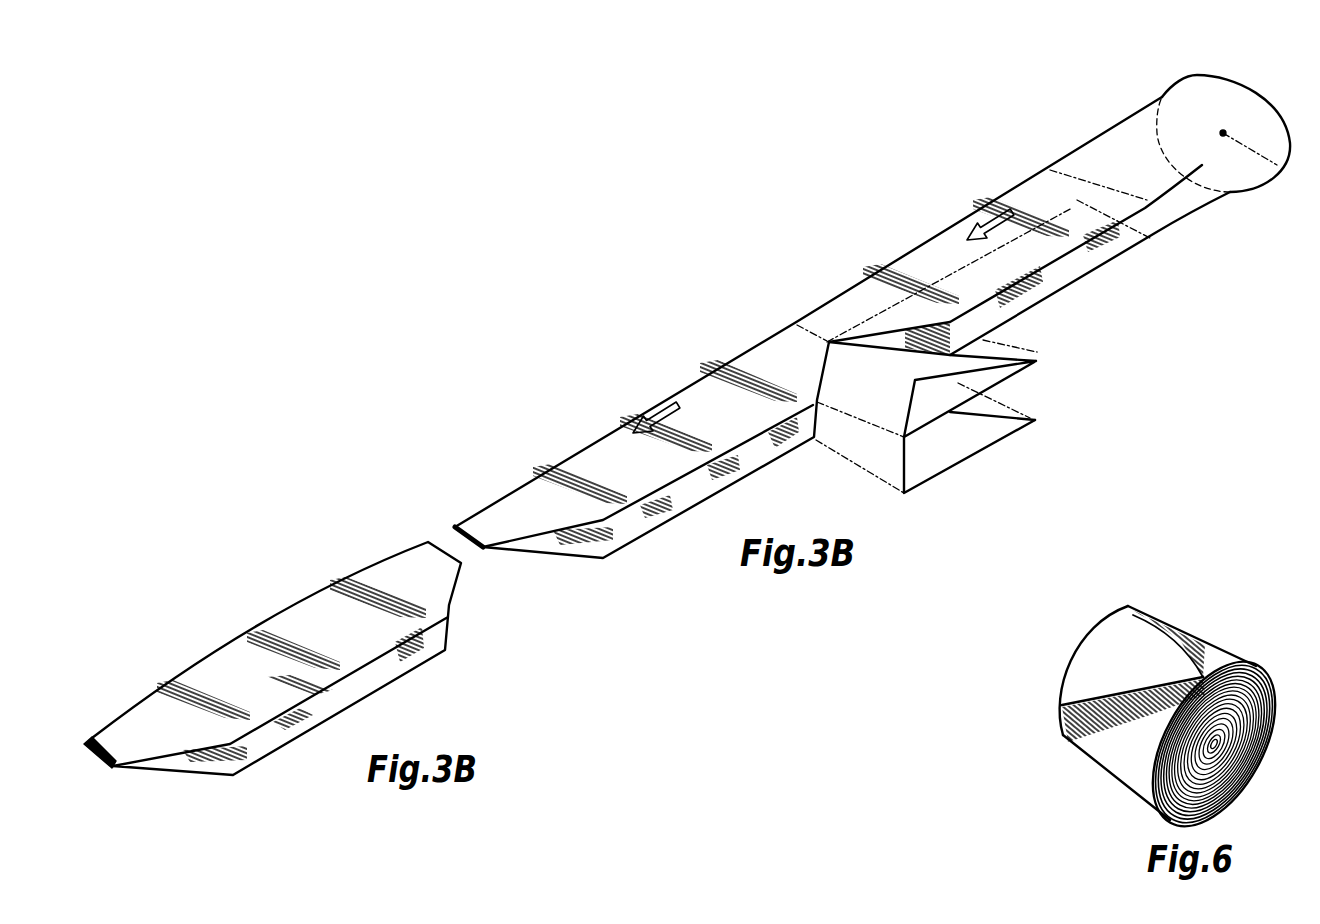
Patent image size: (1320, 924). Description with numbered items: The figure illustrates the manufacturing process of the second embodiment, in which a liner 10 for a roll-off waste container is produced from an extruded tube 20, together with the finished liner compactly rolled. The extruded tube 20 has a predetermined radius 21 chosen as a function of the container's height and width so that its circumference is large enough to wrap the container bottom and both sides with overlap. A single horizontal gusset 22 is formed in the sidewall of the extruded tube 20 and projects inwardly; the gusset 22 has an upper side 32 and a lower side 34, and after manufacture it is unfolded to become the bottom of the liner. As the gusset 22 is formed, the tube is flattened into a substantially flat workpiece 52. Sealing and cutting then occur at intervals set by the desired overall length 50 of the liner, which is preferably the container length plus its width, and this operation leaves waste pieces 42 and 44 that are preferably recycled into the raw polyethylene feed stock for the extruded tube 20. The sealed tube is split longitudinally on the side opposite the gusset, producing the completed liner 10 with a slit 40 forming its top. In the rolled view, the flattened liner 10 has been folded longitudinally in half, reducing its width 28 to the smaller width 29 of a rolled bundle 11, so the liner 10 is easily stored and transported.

In FIG. 3B, the liner 10 is at (307, 684).
In FIG. 3B, the slit 40 is at (102, 728).
In FIG. 6, the slit 40 is at (1085, 646).
In FIG. 3B, the width of flattened completed liner 28 is at (388, 646).
In FIG. 3B, the overall length of the liner 50 is at (452, 522).
In FIG. 3B, the flat workpiece 52 is at (717, 442).
In FIG. 3B, the horizontal gusset 22 is at (1075, 270).
In FIG. 3B, the upper side of gusset 32 is at (1045, 272).
In FIG. 3B, the lower side of gusset 34 is at (1020, 323).
In FIG. 3B, the waste piece 42 is at (985, 388).
In FIG. 3B, the waste piece 44 is at (940, 467).
In FIG. 3B, the extruded tube 20 is at (1238, 83).
In FIG. 3B, the predetermined radius 21 is at (1255, 150).
In FIG. 6, the width of rolled bundle 29 is at (1161, 604).
In FIG. 6, the rolled bundle 11 is at (1103, 777).